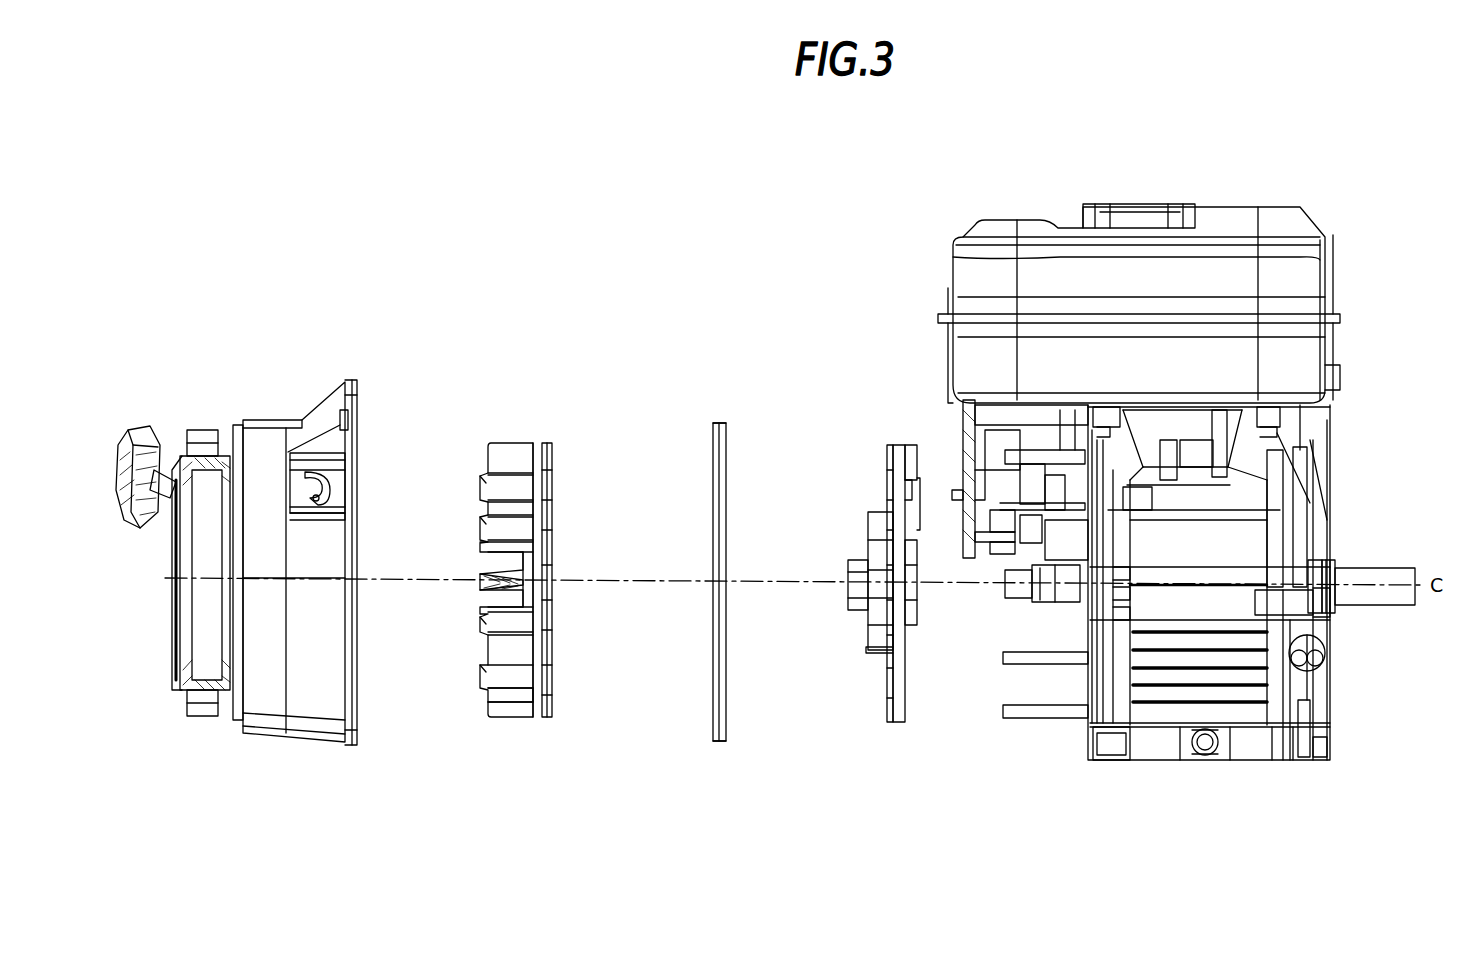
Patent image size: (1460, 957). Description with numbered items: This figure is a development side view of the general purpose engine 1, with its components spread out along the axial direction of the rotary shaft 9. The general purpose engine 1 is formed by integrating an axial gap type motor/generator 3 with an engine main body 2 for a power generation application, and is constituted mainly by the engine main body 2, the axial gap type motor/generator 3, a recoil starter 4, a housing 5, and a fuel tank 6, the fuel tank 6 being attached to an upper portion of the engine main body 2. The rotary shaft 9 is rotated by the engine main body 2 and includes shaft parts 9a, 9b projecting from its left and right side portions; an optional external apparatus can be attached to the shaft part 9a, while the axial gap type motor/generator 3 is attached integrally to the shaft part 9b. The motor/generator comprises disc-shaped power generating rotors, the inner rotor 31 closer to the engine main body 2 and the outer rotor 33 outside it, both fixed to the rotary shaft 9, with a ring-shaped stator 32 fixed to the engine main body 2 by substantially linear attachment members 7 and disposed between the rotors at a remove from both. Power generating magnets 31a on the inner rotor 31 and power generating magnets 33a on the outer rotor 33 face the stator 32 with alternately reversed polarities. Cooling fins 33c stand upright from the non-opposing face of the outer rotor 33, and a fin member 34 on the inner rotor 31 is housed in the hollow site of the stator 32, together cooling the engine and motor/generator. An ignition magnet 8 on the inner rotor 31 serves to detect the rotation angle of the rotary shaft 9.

The general purpose engine 1 is at (458, 183).
The engine main body 2 is at (1165, 762).
The axial gap type motor/generator 3 is at (782, 243).
The recoil starter 4 is at (207, 433).
The housing 5 is at (300, 420).
The fuel tank 6 is at (958, 240).
The attachment members 7 is at (1045, 746).
The ignition magnet 8 is at (920, 470).
The rotary shaft 9 is at (1382, 565).
The shaft part 9a is at (1410, 618).
The shaft part 9b is at (1080, 617).
The inner rotor 31 is at (888, 438).
The power generating magnets 31a is at (887, 707).
The stator 32 is at (722, 412).
The outer rotor 33 is at (512, 432).
The power generating magnets 33a is at (551, 700).
The cooling fins 33c is at (507, 690).
The fin member 34 is at (873, 618).